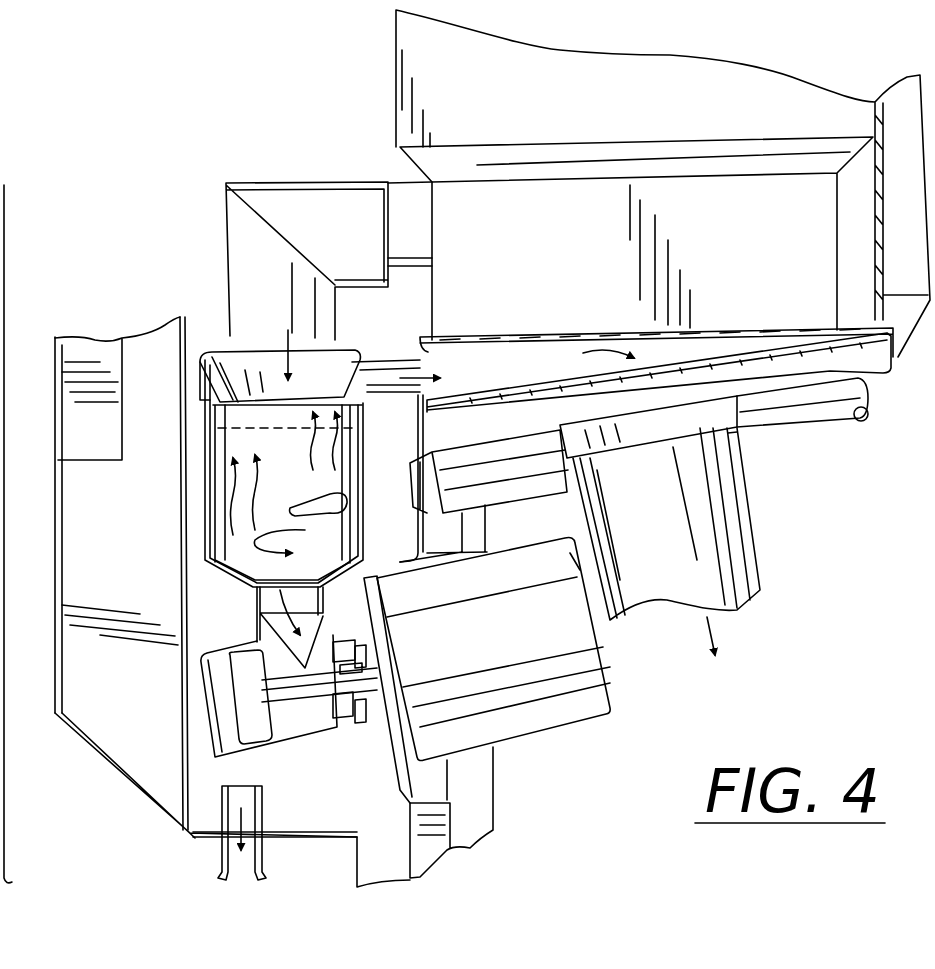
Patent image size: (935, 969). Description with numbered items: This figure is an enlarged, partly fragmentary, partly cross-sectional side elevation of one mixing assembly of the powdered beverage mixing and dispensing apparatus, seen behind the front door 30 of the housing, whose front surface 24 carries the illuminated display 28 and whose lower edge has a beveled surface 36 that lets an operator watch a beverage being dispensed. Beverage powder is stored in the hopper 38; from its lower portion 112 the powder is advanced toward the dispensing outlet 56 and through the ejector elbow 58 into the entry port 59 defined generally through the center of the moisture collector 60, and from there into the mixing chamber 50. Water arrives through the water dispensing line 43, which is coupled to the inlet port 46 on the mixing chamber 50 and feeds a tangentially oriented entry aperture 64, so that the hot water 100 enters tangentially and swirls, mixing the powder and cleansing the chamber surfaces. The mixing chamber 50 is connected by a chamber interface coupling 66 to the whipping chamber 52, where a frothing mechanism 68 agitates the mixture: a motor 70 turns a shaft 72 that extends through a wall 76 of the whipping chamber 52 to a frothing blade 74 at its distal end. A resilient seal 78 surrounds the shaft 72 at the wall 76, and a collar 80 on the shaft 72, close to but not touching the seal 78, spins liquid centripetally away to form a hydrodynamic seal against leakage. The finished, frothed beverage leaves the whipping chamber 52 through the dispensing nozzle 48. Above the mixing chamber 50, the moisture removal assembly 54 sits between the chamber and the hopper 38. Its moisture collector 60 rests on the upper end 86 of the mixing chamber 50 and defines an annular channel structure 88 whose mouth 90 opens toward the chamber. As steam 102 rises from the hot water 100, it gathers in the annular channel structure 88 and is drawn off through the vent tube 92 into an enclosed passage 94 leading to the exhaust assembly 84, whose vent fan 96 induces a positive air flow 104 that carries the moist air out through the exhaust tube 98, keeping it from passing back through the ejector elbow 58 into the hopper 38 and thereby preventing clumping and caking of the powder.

The front surface 24 is at (58, 520).
The illuminated display 28 is at (52, 350).
The front door 30 is at (70, 773).
The beveled surface 36 is at (130, 778).
The hopper 38 is at (766, 92).
The water dispensing line 43 is at (822, 423).
The inlet port 46 is at (373, 468).
The dispensing nozzle 48 is at (218, 846).
The mixing chamber 50 is at (203, 462).
The whipping chamber 52 is at (240, 640).
The moisture removal assembly 54 is at (576, 318).
The dispensing outlet 56 is at (402, 200).
The ejector elbow 58 is at (306, 207).
The entry port 59 is at (225, 348).
The moisture collector 60 is at (198, 377).
The tangentially oriented entry aperture 64 is at (314, 495).
The chamber interface coupling 66 is at (254, 597).
The frothing mechanism 68 is at (466, 762).
The motor 70 is at (595, 687).
The shaft 72 is at (387, 668).
The frothing blade 74 is at (273, 728).
The wall 76 is at (347, 727).
The resilient seal 78 is at (338, 727).
The collar 80 is at (315, 710).
The exhaust assembly 84 is at (758, 473).
The upper end 86 is at (210, 397).
The annular channel structure 88 is at (230, 368).
The mouth 90 is at (220, 407).
The vent tube 92 is at (388, 356).
The enclosed passage 94 is at (540, 362).
The vent fan 96 is at (722, 413).
The exhaust tube 98 is at (745, 558).
The hot water 100 is at (285, 512).
The steam 102 is at (226, 478).
The positive air flow 104 is at (713, 630).
The lower portion 112 is at (820, 285).